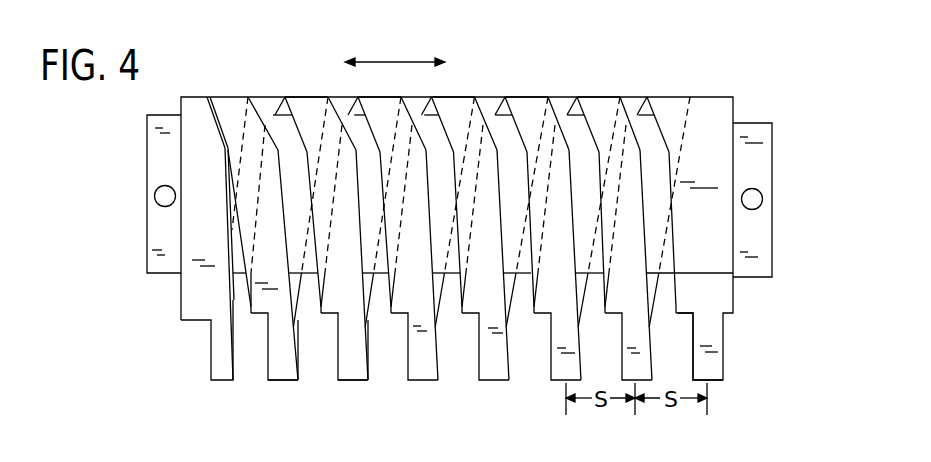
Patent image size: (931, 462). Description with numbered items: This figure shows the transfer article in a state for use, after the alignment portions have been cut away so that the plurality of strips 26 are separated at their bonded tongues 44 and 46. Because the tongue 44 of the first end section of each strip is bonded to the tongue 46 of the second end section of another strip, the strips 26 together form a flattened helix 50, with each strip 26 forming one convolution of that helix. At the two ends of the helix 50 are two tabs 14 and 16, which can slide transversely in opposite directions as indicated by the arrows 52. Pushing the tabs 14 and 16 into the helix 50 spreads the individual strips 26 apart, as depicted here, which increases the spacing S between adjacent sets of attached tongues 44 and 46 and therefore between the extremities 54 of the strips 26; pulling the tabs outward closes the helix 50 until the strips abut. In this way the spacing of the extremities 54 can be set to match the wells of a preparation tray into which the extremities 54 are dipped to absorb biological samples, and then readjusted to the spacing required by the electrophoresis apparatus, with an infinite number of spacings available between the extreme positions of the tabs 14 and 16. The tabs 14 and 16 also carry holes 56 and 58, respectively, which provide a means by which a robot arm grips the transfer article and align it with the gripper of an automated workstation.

The tab 14 is at (157, 148).
The tab 16 is at (766, 160).
The strips 26 is at (322, 102).
The tongue 44 is at (282, 372).
The tongue 46 is at (299, 340).
The flattened helix 50 is at (452, 102).
The arrows 52 is at (398, 58).
The extremities 54 is at (222, 382).
The hole 56 is at (167, 207).
The hole 58 is at (760, 204).